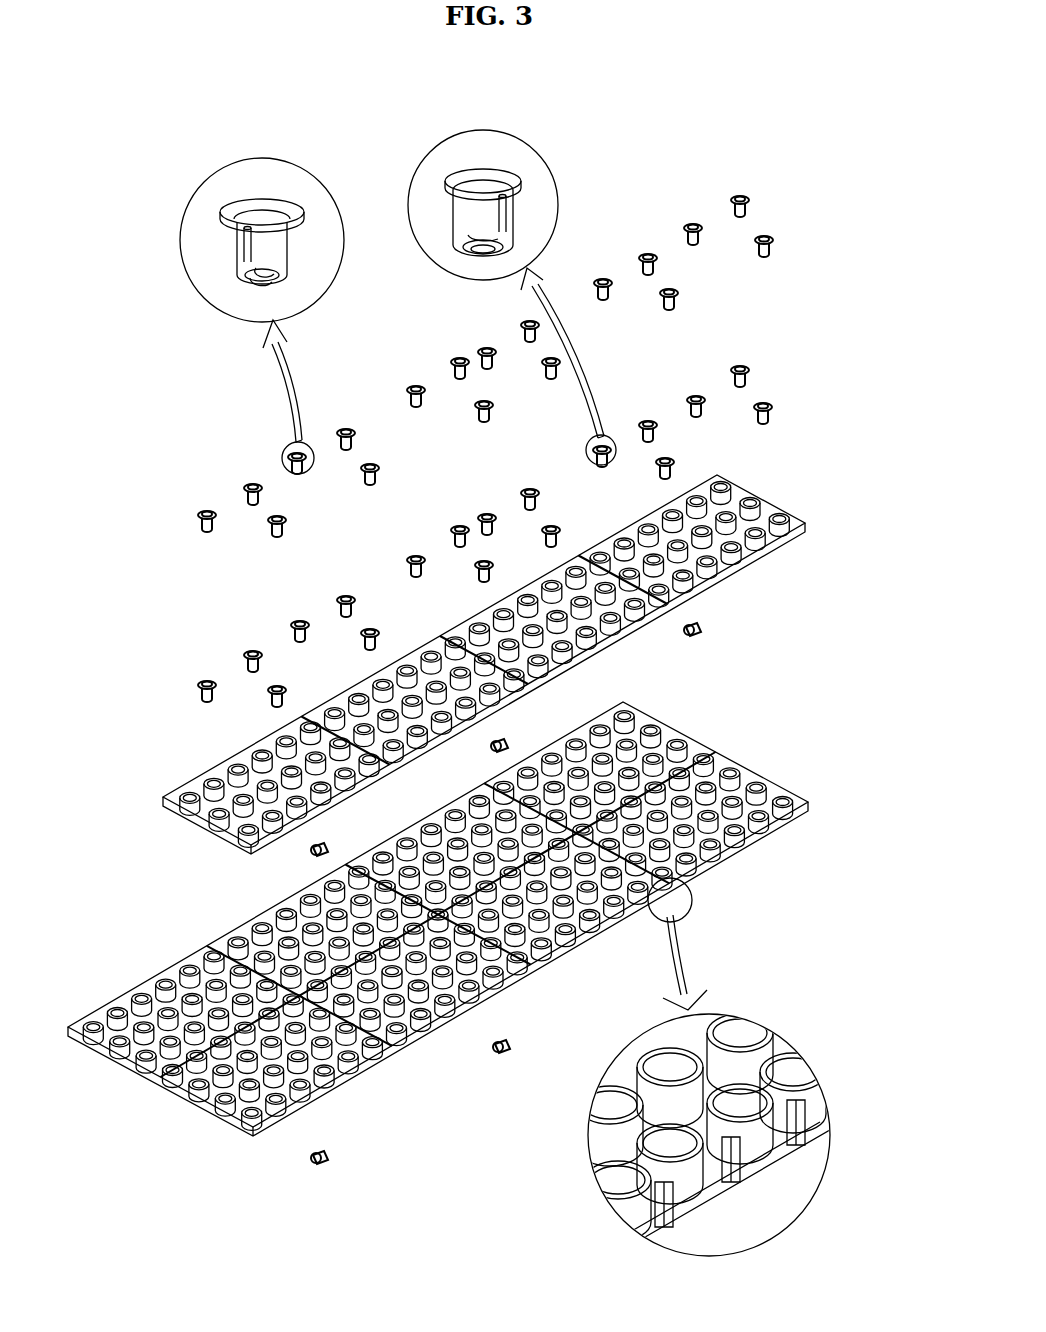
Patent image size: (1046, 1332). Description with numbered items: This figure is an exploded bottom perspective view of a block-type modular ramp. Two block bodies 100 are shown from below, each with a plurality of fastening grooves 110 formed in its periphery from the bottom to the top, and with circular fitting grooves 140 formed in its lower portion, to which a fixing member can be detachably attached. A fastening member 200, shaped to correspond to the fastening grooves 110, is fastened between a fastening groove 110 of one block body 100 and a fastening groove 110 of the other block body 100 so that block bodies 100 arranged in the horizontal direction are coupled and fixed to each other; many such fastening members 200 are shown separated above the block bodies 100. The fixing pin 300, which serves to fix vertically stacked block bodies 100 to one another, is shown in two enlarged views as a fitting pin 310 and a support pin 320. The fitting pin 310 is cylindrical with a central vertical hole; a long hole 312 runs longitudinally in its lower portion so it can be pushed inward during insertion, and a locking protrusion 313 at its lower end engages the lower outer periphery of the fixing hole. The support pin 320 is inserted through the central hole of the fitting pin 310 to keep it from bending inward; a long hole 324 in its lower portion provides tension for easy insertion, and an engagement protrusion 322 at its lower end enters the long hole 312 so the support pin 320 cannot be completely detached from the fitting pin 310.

The block body 100 is at (187, 765).
The fastening groove 110 is at (660, 1218).
The fitting groove 140 is at (673, 1152).
The fastening member 200 is at (703, 633).
The fixing pin 300 is at (348, 107).
The fitting pin 310 is at (413, 180).
The long hole 312 is at (502, 203).
The locking protrusion 313 is at (490, 223).
The support pin 320 is at (193, 200).
The engagement protrusion 322 is at (277, 258).
The long hole 324 is at (247, 250).